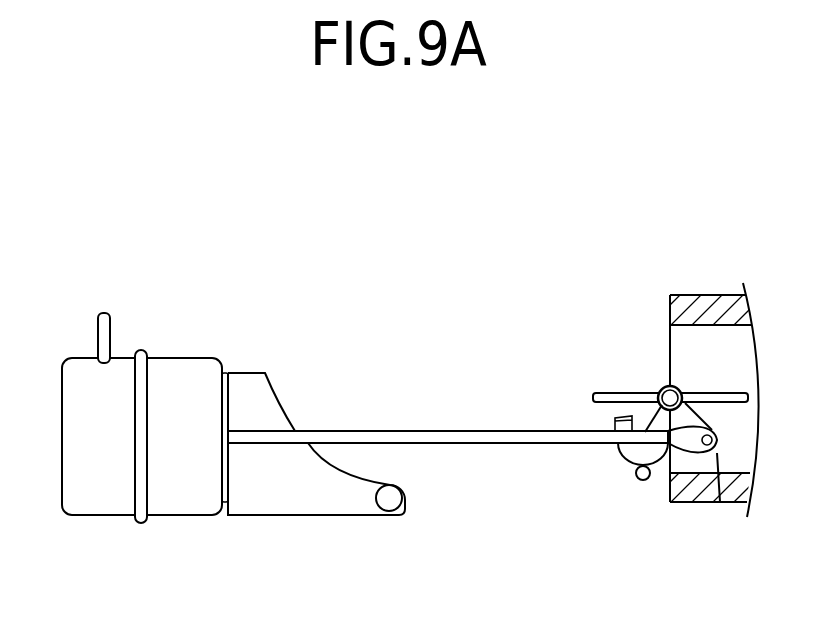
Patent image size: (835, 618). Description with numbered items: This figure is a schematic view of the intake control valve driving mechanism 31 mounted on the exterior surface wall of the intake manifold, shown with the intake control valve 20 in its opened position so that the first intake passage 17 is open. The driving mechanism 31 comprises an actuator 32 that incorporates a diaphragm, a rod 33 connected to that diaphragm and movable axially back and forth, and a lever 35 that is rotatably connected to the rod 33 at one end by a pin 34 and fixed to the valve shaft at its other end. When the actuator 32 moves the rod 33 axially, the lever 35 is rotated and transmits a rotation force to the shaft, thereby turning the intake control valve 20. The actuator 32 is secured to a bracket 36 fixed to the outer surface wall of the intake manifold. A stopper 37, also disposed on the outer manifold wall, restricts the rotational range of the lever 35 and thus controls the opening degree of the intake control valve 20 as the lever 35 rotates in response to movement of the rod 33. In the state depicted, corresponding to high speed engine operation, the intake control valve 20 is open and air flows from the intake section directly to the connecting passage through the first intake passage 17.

The first intake passage 17 is at (693, 352).
The intake control valve 20 is at (612, 392).
The intake control valve driving mechanism 31 is at (204, 413).
The actuator 32 is at (82, 423).
The rod 33 is at (438, 430).
The pin 34 is at (720, 502).
The lever 35 is at (627, 457).
The bracket 36 is at (288, 503).
The stopper 37 is at (640, 480).